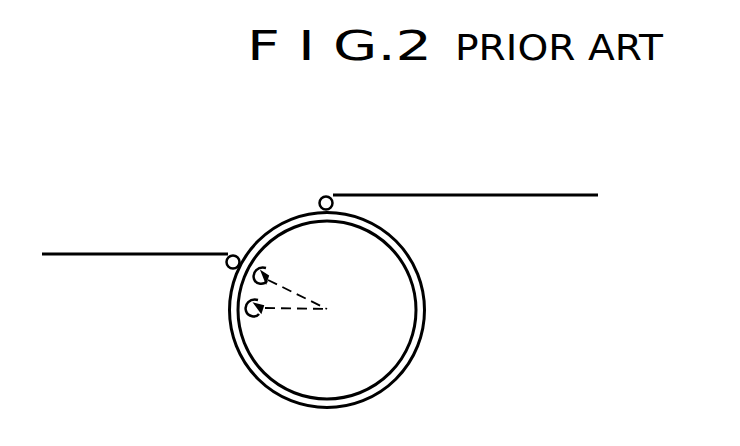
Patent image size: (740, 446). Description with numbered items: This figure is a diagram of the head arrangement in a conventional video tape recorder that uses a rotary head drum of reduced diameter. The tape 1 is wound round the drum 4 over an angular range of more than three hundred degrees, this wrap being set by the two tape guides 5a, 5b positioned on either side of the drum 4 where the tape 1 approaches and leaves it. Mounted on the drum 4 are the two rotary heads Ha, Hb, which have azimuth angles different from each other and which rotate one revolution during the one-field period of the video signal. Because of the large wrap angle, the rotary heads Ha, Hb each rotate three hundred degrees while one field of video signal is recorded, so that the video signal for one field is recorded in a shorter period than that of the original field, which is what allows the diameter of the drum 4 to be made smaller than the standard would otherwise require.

The tape 1 is at (500, 195).
The drum 4 is at (414, 307).
The tape guide 5a is at (326, 196).
The tape guide 5b is at (237, 255).
The rotary head Ha is at (266, 266).
The rotary head Hb is at (250, 320).